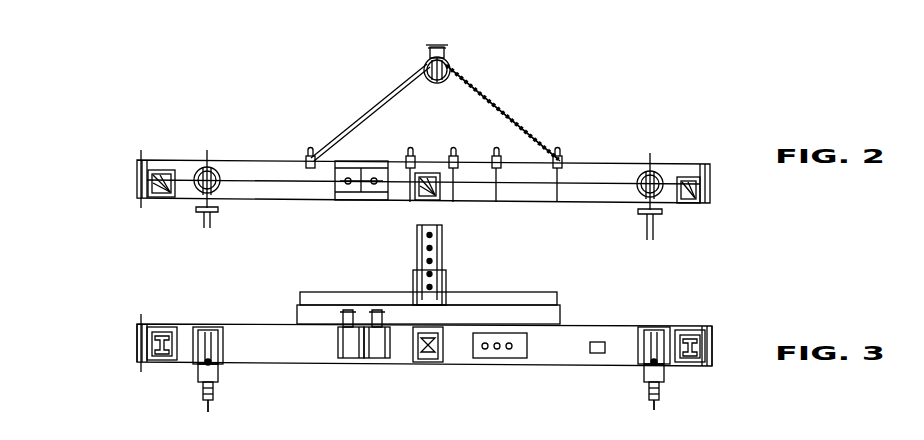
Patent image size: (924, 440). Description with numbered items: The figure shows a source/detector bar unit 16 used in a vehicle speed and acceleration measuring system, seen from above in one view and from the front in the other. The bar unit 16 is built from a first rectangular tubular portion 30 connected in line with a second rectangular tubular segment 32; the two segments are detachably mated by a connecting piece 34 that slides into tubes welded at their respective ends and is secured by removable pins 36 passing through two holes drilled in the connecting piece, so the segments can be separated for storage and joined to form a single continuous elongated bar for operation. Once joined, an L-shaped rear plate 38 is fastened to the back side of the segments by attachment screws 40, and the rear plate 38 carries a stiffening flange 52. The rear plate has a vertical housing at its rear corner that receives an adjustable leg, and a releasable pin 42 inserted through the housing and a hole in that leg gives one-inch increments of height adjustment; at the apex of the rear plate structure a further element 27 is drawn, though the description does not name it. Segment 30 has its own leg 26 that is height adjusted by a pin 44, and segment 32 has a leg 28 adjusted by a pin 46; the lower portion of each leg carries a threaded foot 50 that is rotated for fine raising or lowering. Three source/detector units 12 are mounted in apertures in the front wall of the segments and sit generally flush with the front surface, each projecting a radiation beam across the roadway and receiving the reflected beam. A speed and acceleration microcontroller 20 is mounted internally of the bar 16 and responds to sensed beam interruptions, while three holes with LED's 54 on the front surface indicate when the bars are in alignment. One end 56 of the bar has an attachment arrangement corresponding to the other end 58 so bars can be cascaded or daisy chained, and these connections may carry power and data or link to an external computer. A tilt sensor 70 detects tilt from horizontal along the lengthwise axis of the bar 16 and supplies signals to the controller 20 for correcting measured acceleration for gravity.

In FIG. 2, the source/detector unit 12 is at (158, 200).
In FIG. 3, the source/detector unit 12 is at (152, 362).
In FIG. 2, the S/D bar unit 16 is at (265, 108).
In FIG. 3, the S/D bar unit 16 is at (265, 300).
In FIG. 3, the speed and acceleration microcontroller 20 is at (522, 366).
In FIG. 2, the leg 26 is at (210, 166).
In FIG. 3, the leg 26 is at (222, 372).
In FIG. 2, the top pulley 27 is at (452, 71).
In FIG. 2, the leg 28 is at (665, 170).
In FIG. 3, the leg 28 is at (668, 374).
In FIG. 2, the first rectangular tubular portion 30 is at (268, 203).
In FIG. 2, the second rectangular tubular segment 32 is at (538, 205).
In FIG. 2, the connecting piece 34 is at (352, 203).
In FIG. 3, the removable pins 36 is at (348, 310).
In FIG. 2, the L-shaped rear plate 38 is at (508, 118).
In FIG. 2, the attachment screws 40 is at (309, 150).
In FIG. 2, the releasable pin 42 is at (430, 48).
In FIG. 2, the pin 44 is at (205, 230).
In FIG. 2, the pin 46 is at (656, 226).
In FIG. 3, the threaded foot 50 is at (212, 400).
In FIG. 2, the stiffening flange 52 is at (383, 98).
In FIG. 3, the LED's 54 is at (488, 360).
In FIG. 3, the end 56 is at (712, 340).
In FIG. 3, the other end 58 is at (137, 334).
In FIG. 3, the tilt sensor 70 is at (600, 340).